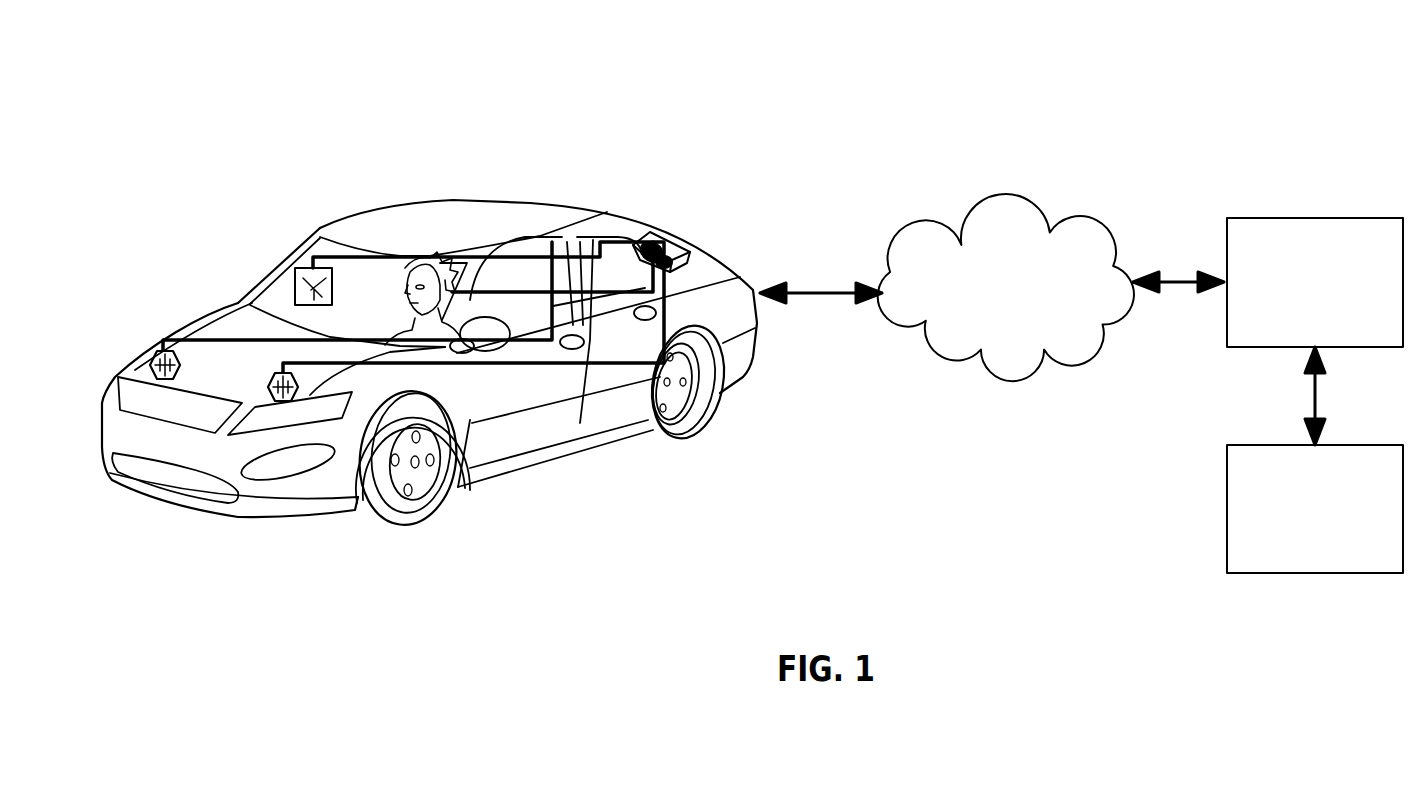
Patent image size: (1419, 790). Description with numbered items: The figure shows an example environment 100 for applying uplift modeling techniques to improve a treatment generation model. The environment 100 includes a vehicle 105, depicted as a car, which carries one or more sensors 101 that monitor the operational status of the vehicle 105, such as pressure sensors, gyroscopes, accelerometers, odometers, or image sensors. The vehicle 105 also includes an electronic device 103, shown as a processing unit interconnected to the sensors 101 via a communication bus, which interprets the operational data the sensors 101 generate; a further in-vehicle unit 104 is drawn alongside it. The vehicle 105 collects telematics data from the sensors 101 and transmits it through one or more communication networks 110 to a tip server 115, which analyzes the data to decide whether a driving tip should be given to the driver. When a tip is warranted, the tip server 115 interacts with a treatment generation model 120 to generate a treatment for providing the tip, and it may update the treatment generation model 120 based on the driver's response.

The environment 100 is at (948, 81).
The sensors 101 is at (155, 352).
The electronic device 103 is at (674, 240).
The wireless communication device 104 is at (308, 267).
The vehicle 105 is at (742, 353).
The communication networks 110 is at (1077, 213).
The tip server 115 is at (1358, 217).
The treatment generation model 120 is at (1363, 444).